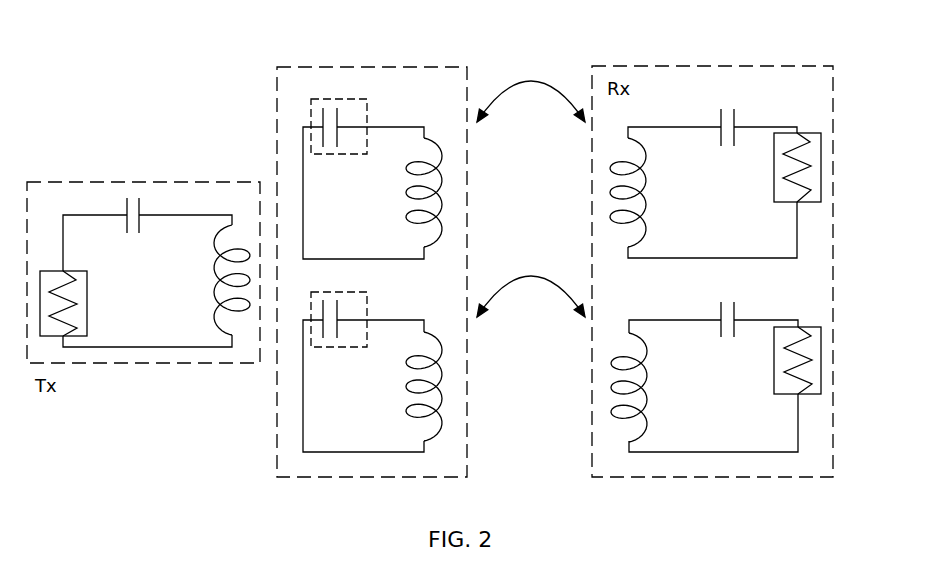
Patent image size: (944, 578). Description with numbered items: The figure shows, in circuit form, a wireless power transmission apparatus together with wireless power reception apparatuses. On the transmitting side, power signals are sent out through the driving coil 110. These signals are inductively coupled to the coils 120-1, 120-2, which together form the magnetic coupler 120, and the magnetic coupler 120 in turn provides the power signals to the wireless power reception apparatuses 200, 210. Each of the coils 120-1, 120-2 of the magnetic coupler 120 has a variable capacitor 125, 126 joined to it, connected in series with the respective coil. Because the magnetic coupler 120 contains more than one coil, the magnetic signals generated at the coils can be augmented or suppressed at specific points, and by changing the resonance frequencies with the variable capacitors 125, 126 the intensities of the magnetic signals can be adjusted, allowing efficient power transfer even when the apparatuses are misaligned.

The driving coil 110 is at (216, 293).
The magnetic coupler 120 is at (435, 66).
The coil 120-1 is at (420, 169).
The coil 120-2 is at (420, 361).
The variable capacitor 125 is at (338, 113).
The variable capacitor 126 is at (338, 304).
The wireless power reception apparatus 200 is at (798, 223).
The wireless power reception apparatus 210 is at (799, 415).